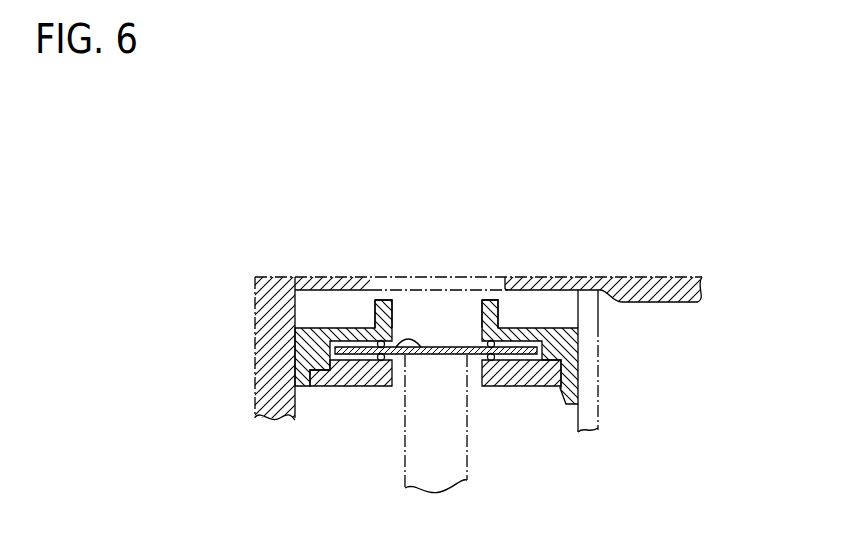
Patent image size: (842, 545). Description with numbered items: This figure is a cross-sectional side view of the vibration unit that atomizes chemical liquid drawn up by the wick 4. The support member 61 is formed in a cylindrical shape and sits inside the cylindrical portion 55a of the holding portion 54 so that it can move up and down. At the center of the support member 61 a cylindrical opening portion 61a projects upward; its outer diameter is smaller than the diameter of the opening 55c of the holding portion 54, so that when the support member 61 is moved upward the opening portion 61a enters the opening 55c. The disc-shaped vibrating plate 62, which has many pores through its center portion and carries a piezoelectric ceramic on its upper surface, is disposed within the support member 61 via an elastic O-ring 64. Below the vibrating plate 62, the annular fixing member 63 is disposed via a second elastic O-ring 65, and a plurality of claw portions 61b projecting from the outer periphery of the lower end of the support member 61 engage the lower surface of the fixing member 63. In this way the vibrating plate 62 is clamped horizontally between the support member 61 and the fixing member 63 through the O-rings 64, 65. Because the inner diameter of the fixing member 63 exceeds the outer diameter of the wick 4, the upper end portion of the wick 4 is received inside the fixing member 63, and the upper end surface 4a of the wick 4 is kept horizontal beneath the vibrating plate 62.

The wick 4 is at (458, 468).
The upper end surface 4a is at (403, 357).
The holding portion 54 is at (560, 277).
The cylindrical portion 55a is at (261, 382).
The opening 55c is at (503, 285).
The support member 61 is at (295, 352).
The opening portion 61a is at (383, 299).
The claw portions 61b is at (563, 405).
The vibrating plate 62 is at (445, 347).
The fixing member 63 is at (333, 386).
The O-ring 64 is at (494, 341).
The O-ring 65 is at (492, 358).